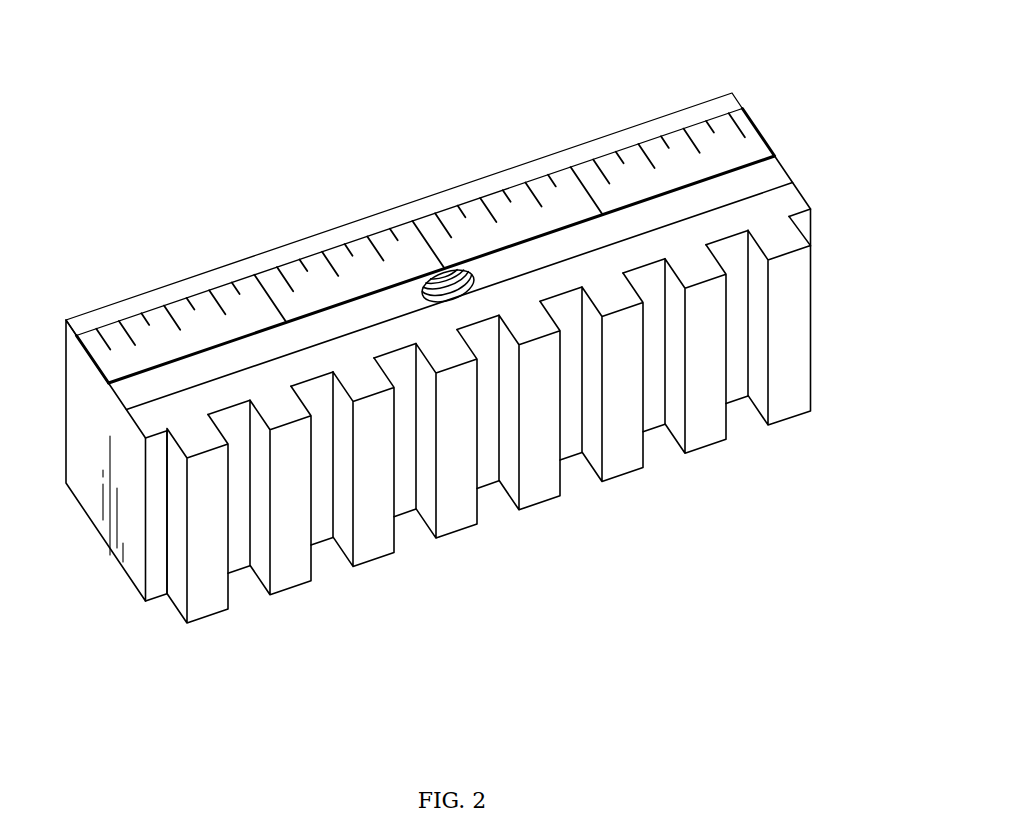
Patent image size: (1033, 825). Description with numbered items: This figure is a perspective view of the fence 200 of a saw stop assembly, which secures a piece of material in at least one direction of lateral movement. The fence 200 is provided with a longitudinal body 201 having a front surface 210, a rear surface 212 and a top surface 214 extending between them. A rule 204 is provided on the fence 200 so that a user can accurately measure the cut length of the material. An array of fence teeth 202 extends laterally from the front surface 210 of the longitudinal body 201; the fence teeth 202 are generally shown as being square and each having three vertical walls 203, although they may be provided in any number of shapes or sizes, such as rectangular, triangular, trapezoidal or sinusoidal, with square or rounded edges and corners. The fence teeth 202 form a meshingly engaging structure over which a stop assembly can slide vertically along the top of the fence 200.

The fence 200 is at (337, 140).
The longitudinal body 201 is at (786, 128).
The rear surface 212 is at (652, 117).
The top surface 214 is at (795, 201).
The rule 204 is at (88, 340).
The front surface 210 is at (158, 568).
The fence teeth 202 is at (309, 606).
The vertical walls 203 is at (426, 518).